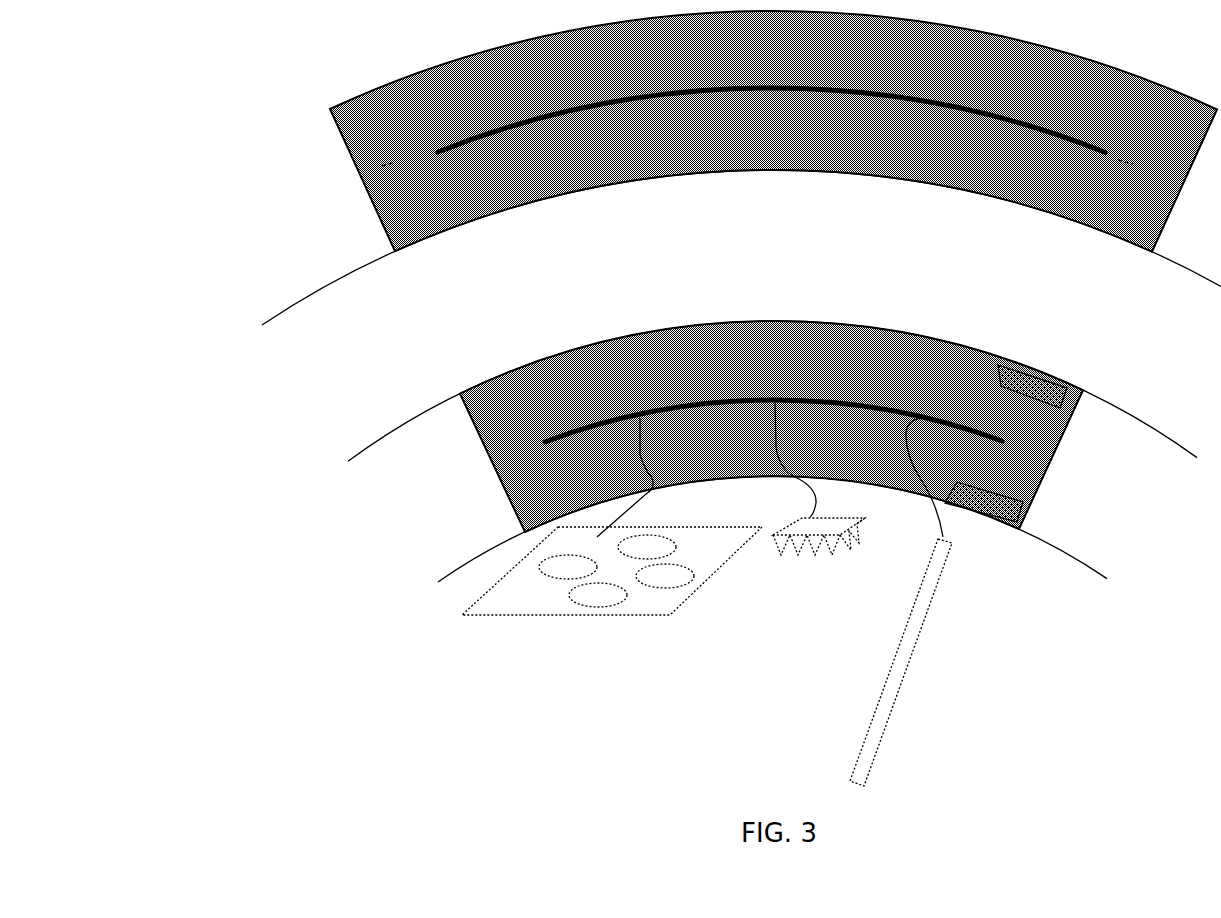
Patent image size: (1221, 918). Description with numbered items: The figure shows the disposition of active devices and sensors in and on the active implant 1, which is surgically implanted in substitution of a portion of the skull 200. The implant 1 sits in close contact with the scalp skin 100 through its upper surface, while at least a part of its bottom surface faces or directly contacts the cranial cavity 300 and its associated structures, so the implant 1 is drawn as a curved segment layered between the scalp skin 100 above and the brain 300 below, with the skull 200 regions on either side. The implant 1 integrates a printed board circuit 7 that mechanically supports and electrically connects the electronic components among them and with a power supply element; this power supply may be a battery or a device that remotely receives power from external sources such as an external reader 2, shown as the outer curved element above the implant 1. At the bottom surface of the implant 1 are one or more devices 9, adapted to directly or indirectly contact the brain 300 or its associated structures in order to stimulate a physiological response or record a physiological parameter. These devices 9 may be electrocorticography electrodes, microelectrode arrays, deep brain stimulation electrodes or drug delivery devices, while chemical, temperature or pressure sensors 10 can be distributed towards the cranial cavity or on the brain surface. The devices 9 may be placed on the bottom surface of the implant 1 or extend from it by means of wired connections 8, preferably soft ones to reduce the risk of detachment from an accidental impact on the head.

The active implant 1 is at (771, 426).
The external reader 2 is at (773, 131).
The printed board circuit (PCB) 7 is at (850, 110).
The wired connections 8 is at (792, 440).
The device 9 is at (638, 595).
The sensors 10 is at (1010, 513).
The scalp skin 100 is at (741, 247).
The skull 200 is at (772, 424).
The cranial cavity / brain 300 is at (772, 598).